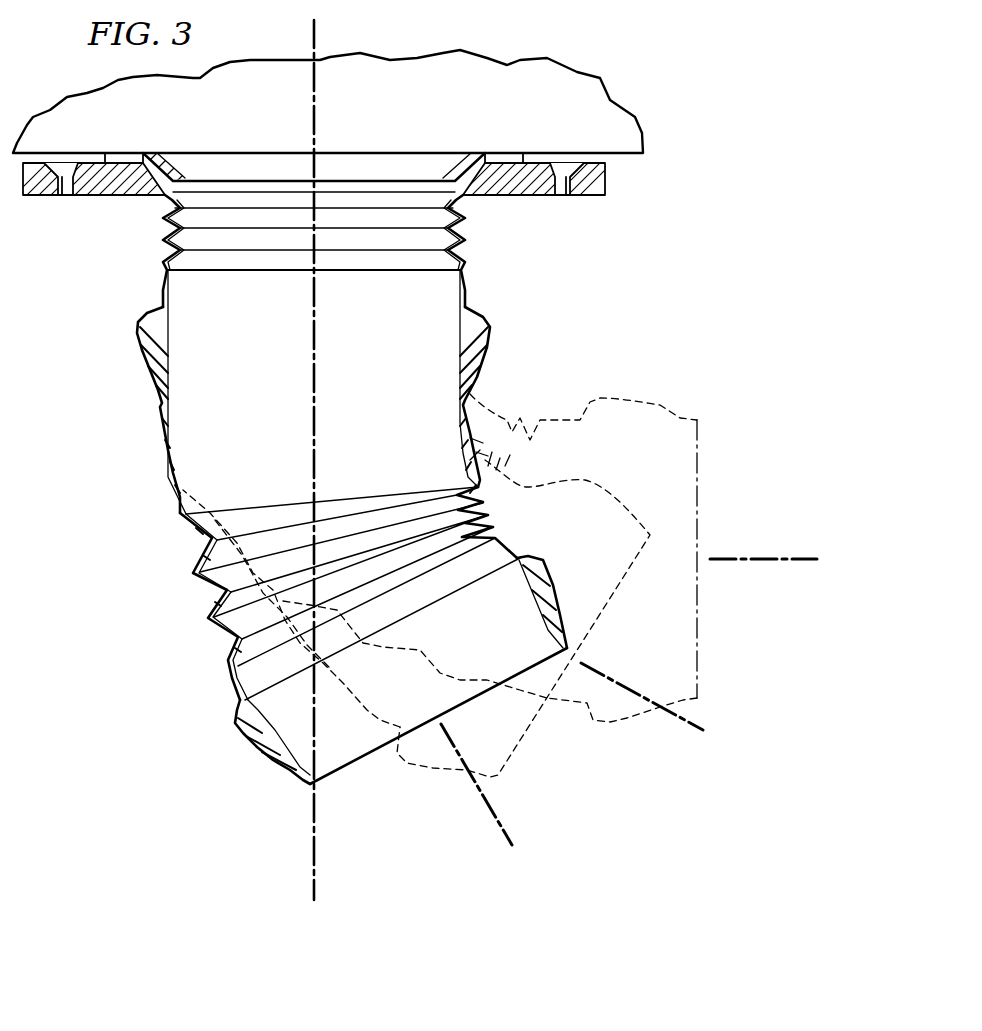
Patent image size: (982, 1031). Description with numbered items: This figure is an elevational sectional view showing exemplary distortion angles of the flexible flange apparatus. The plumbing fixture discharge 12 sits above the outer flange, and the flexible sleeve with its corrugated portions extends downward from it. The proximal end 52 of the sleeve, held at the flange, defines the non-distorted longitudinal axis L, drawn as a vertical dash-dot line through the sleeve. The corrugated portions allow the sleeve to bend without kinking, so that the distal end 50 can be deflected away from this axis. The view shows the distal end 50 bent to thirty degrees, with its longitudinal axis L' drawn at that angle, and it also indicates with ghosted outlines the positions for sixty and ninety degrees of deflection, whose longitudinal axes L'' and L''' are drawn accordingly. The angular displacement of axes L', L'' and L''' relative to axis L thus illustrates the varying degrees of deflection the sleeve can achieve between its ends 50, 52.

The plumbing fixture discharge 12 is at (592, 73).
The proximal end 52 is at (240, 181).
The distal end 50 is at (357, 760).
The longitudinal axis L is at (295, 462).
The longitudinal axis L' is at (499, 796).
The longitudinal axis L'' is at (668, 714).
The longitudinal axis L''' is at (790, 543).